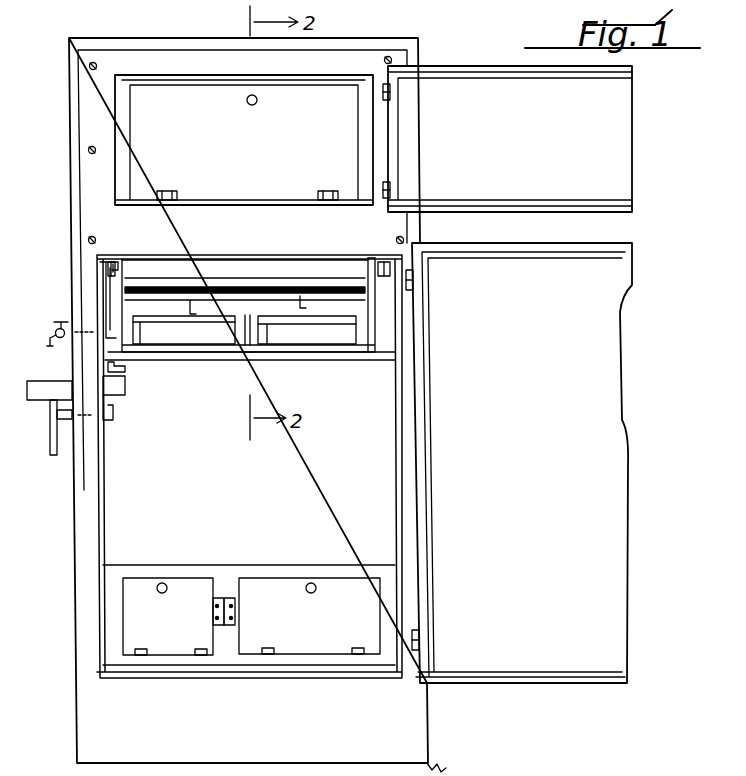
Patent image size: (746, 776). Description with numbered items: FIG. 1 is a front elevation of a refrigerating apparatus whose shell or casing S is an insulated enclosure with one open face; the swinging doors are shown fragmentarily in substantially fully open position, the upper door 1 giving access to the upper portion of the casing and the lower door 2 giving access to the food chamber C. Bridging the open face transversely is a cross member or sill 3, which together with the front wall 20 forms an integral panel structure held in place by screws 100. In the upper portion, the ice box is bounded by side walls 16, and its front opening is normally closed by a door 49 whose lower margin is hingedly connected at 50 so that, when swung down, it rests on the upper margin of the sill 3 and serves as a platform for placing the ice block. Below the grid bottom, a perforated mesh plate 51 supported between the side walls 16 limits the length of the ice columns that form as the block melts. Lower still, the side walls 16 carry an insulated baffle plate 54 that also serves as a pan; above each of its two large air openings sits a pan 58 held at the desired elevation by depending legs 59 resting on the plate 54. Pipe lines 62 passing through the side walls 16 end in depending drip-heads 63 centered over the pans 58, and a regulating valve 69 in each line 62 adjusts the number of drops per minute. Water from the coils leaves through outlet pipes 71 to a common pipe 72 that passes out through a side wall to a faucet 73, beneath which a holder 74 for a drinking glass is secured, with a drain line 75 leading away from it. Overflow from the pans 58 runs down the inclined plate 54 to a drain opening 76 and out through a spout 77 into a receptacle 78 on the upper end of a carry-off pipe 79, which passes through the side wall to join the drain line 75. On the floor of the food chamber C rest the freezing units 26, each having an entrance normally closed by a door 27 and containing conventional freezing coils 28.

The upper door 1 is at (600, 150).
The lower door 2 is at (598, 355).
The cross member or sill 3 is at (232, 217).
The side walls 16 is at (378, 330).
The front wall 20 is at (195, 70).
The freezing units 26 is at (229, 650).
The door 27 is at (249, 589).
The freezing coils 28 is at (210, 604).
The door 49 is at (297, 104).
The hinge connection 50 is at (329, 193).
The perforated plate 51 is at (280, 276).
The baffle plate 54 is at (240, 308).
The pan 58 is at (249, 325).
The depending legs 59 is at (145, 330).
The pipe lines 62 is at (170, 280).
The drip-heads 63 is at (296, 298).
The regulating valve 69 is at (114, 265).
The outlet pipes 71 is at (100, 266).
The common pipe 72 is at (106, 302).
The faucet 73 is at (50, 337).
The holder 74 is at (32, 396).
The drain line 75 is at (50, 440).
The drain opening 76 is at (226, 356).
The spout 77 is at (128, 370).
The receptacle 78 is at (126, 390).
The carry-off pipe 79 is at (113, 420).
The screws 100 is at (88, 67).
The shell or casing S is at (74, 501).
The food chamber C is at (362, 494).